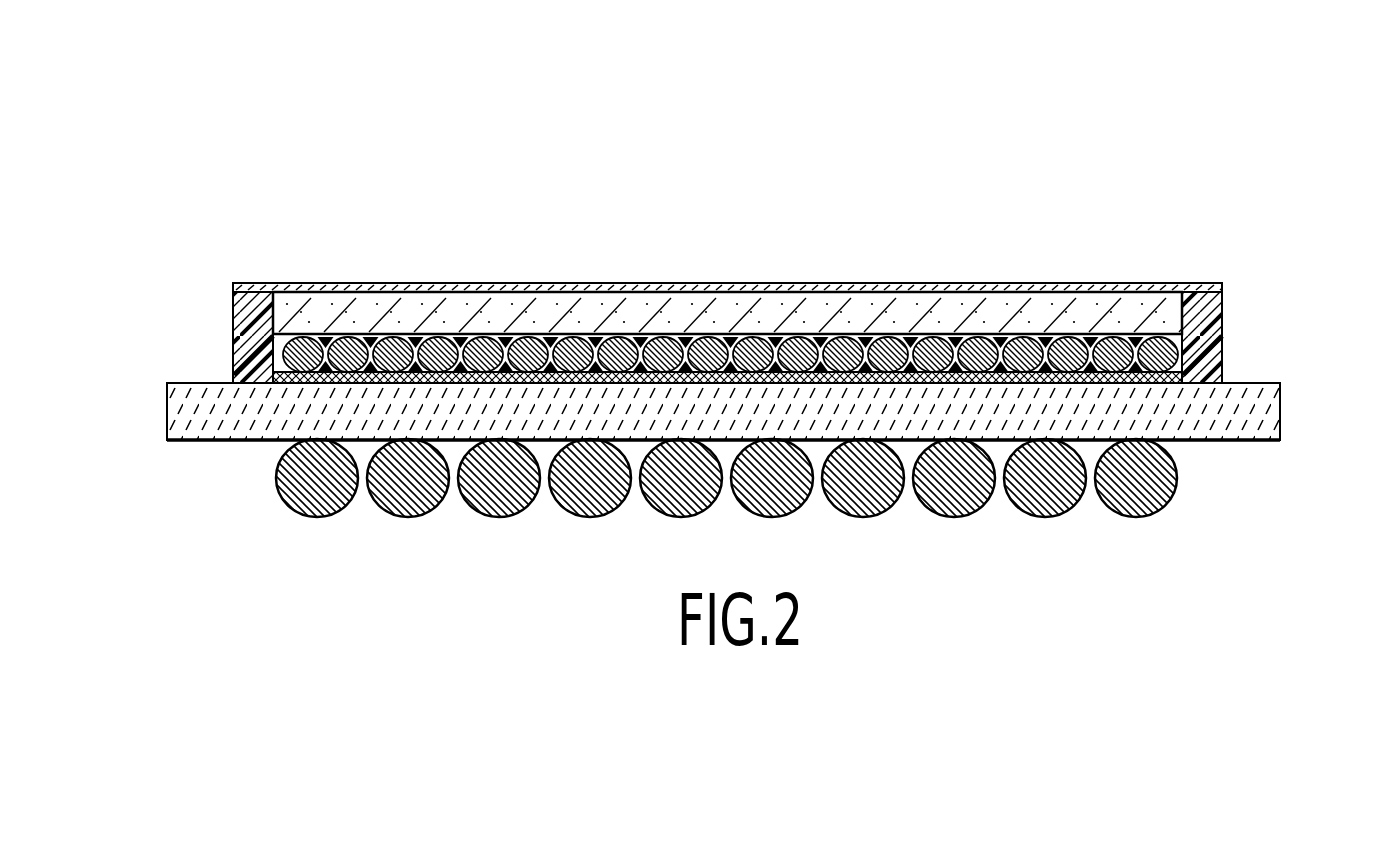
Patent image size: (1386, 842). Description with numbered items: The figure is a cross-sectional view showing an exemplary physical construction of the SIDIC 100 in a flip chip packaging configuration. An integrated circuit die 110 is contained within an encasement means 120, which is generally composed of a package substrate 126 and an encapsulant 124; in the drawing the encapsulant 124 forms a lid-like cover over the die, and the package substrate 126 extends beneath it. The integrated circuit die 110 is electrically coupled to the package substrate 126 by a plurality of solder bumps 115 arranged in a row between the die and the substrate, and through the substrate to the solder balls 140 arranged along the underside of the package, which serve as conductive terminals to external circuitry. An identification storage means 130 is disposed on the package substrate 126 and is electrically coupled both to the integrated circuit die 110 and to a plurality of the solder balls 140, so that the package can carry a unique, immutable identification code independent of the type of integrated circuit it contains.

The SIDIC 100 is at (900, 197).
The integrated circuit die 110 is at (1072, 312).
The solder bumps 115 is at (622, 347).
The encasement means 120 is at (1296, 268).
The encapsulant 124 is at (233, 312).
The package substrate 126 is at (167, 411).
The identification storage means 130 is at (263, 371).
The solder balls 140 is at (1152, 478).